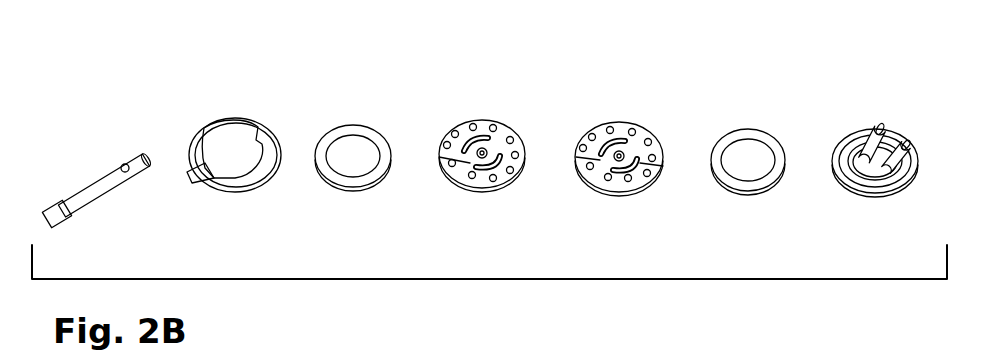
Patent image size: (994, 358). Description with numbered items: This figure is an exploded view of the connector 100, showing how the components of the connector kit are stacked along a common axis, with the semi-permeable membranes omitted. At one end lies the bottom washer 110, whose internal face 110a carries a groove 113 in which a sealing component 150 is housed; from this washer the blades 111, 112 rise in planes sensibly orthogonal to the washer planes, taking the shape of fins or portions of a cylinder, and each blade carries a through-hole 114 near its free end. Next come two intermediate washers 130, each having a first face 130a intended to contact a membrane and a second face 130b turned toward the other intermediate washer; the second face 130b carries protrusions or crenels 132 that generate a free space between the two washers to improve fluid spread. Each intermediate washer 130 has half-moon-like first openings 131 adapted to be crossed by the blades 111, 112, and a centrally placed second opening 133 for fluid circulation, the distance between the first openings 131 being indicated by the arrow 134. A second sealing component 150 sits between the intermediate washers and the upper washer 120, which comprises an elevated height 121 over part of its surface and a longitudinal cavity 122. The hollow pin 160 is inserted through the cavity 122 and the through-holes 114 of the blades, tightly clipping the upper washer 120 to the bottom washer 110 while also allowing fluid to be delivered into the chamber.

The connector 100 is at (863, 291).
The bottom washer 110 is at (867, 161).
The internal face of the bottom washer 110a is at (894, 131).
The blade 112 is at (856, 160).
The groove 113 is at (847, 136).
The upper washer 120 is at (226, 154).
The elevated height 121 is at (233, 140).
The longitudinal cavity 122 is at (190, 173).
The intermediate washer 130 is at (563, 154).
The first face of the intermediate washer 130a is at (608, 190).
The second face of the intermediate washer 130b is at (637, 137).
The first opening 131 is at (663, 167).
The protrusions 132 is at (440, 160).
The second opening 133 is at (577, 160).
The arrow 134 is at (478, 162).
The sealing component 150 is at (363, 128).
The hollow pin 160 is at (97, 188).
The blade 111 is at (388, 347).
The through-hole 114 is at (448, 357).